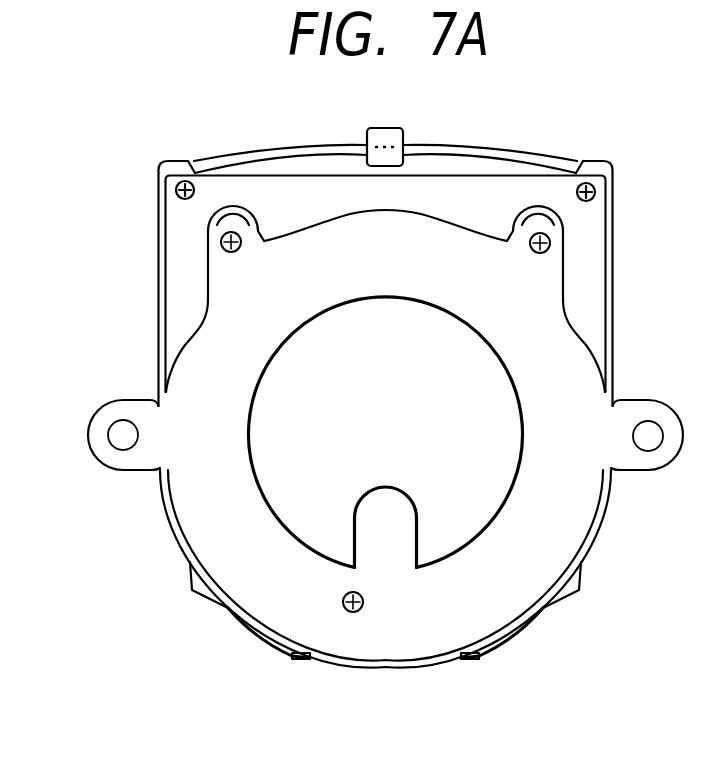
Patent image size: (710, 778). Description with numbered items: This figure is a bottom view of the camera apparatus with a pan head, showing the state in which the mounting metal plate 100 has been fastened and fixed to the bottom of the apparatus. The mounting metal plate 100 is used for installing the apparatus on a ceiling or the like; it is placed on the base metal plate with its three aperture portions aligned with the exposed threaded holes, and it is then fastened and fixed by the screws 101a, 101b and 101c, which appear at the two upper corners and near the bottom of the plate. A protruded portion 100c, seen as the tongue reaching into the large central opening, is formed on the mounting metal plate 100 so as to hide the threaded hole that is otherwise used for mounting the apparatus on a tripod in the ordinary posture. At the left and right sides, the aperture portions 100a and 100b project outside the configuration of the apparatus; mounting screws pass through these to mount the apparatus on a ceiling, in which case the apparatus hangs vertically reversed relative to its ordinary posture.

The mounting metal plate 100 is at (565, 540).
The aperture portion 100a is at (120, 444).
The aperture portion 100b is at (647, 440).
The protruded portion 100c is at (385, 525).
The screw 101a is at (352, 614).
The screw 101b is at (220, 241).
The screw 101c is at (551, 243).